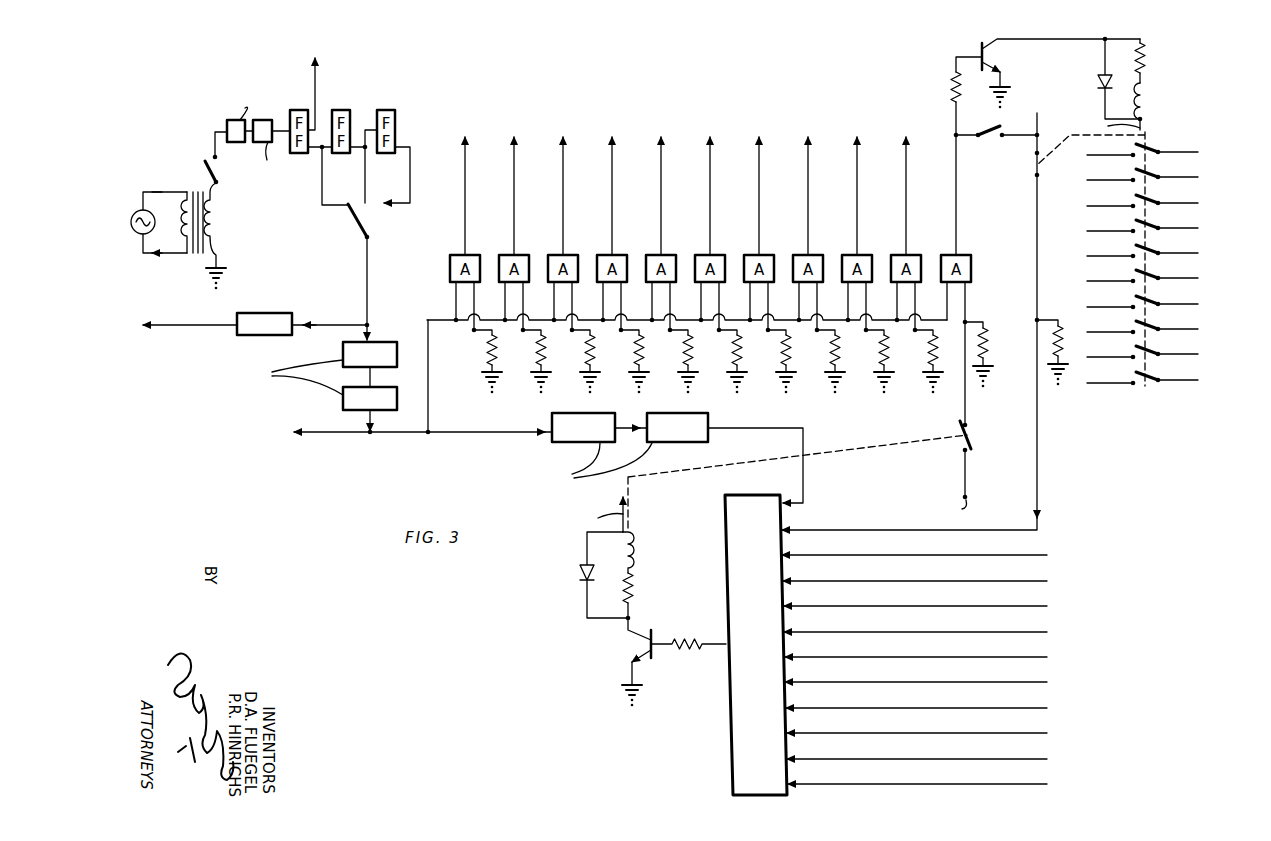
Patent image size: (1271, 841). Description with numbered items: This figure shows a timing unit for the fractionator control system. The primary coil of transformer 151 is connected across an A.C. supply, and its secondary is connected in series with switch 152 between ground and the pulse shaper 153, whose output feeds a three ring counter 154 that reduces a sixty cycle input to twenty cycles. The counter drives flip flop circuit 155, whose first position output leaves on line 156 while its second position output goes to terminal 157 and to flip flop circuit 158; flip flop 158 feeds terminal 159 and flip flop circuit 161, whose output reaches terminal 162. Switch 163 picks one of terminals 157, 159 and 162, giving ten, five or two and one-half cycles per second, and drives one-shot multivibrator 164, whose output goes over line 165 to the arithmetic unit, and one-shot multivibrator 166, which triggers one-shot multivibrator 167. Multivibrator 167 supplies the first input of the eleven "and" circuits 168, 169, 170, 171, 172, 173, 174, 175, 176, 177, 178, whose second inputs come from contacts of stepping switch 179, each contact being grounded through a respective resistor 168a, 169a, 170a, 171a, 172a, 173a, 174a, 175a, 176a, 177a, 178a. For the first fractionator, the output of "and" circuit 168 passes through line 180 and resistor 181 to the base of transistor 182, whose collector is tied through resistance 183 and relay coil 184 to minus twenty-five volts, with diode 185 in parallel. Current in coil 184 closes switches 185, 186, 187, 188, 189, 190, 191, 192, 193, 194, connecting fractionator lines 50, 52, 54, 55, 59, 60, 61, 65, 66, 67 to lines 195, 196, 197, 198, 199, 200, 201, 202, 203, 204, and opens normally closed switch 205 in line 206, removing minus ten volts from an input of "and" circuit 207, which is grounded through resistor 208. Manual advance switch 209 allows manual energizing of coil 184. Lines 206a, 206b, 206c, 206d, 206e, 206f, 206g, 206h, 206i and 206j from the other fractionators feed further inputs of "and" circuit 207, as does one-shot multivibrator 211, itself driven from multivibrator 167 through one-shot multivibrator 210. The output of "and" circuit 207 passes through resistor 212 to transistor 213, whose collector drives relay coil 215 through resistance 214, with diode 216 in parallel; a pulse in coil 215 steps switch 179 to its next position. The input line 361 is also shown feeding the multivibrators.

The transformer 151 is at (190, 186).
The switch 152 is at (208, 163).
The pulse shaper 153 is at (218, 132).
The three ring counter 154 is at (262, 143).
The flip flop circuit 155 is at (300, 108).
The line 156 is at (316, 58).
The terminal 157 is at (346, 208).
The flip flop circuit 158 is at (350, 90).
The terminal 159 is at (365, 200).
The flip flop circuit 161 is at (395, 90).
The terminal 162 is at (385, 205).
The switch 163 is at (361, 229).
The one-shot multivibrator 164 is at (290, 336).
The line 165 is at (210, 326).
The one-shot multivibrator 166 is at (343, 357).
The one-shot multivibrator 167 is at (343, 404).
The "and" circuit 168 is at (972, 258).
The resistor 168a is at (1000, 342).
The "and" circuit 169 is at (914, 254).
The resistor 169a is at (916, 337).
The "and" circuit 170 is at (865, 254).
The resistor 170a is at (867, 337).
The "and" circuit 171 is at (816, 254).
The resistor 171a is at (818, 337).
The "and" circuit 172 is at (767, 254).
The resistor 172a is at (769, 337).
The "and" circuit 173 is at (718, 254).
The resistor 173a is at (720, 337).
The "and" circuit 174 is at (669, 254).
The resistor 174a is at (671, 337).
The "and" circuit 175 is at (620, 254).
The resistor 175a is at (622, 337).
The "and" circuit 176 is at (571, 254).
The resistor 176a is at (573, 337).
The "and" circuit 177 is at (522, 254).
The resistor 177a is at (524, 337).
The "and" circuit 178 is at (458, 254).
The resistor 178a is at (490, 352).
The stepping switch 179 is at (970, 440).
The line 180 is at (958, 228).
The resistor 181 is at (953, 80).
The transistor 182 is at (980, 46).
The resistance 183 is at (1148, 55).
The relay coil 184 is at (1150, 92).
The diode / switch 185 is at (1100, 83).
The switch 186 is at (1154, 175).
The switch 187 is at (1154, 201).
The switch 188 is at (1154, 226).
The switch 189 is at (1154, 251).
The switch 190 is at (1154, 276).
The switch 191 is at (1154, 302).
The switch 192 is at (1154, 327).
The switch 193 is at (1154, 352).
The switch 194 is at (1154, 378).
The line 195 is at (1087, 155).
The line 196 is at (1087, 180).
The line 197 is at (1087, 206).
The line 198 is at (1087, 231).
The line 199 is at (1087, 256).
The line 200 is at (1087, 281).
The line 201 is at (1087, 307).
The line 202 is at (1089, 316).
The line 203 is at (1108, 357).
The line 204 is at (1108, 383).
The normally closed switch 205 is at (1036, 164).
The line 206 is at (1045, 530).
The line 206a is at (1047, 555).
The line 206b is at (1047, 581).
The line 206c is at (1047, 606).
The line 206d is at (1047, 632).
The line 206e is at (1047, 657).
The line 206f is at (1047, 682).
The line 206g is at (1047, 708).
The line 206h is at (1047, 733).
The line 206i is at (1047, 759).
The line 206j is at (1047, 784).
The "and" circuit 207 is at (745, 718).
The resistor 208 is at (1068, 352).
The manual advance switch 209 is at (992, 140).
The one-shot multivibrator 210 is at (598, 444).
The one-shot multivibrator 211 is at (682, 444).
The resistor 212 is at (676, 653).
The transistor 213 is at (655, 638).
The resistance 214 is at (642, 590).
The relay coil 215 is at (645, 540).
The diode 216 is at (580, 570).
The input lead 361 is at (322, 434).
The line 50 is at (1198, 152).
The line 52 is at (1198, 177).
The line 54 is at (1198, 203).
The line 55 is at (1198, 228).
The line 59 is at (1198, 253).
The line 60 is at (1198, 278).
The line 61 is at (1198, 304).
The line 65 is at (1198, 329).
The line 66 is at (1198, 354).
The line 67 is at (1198, 380).